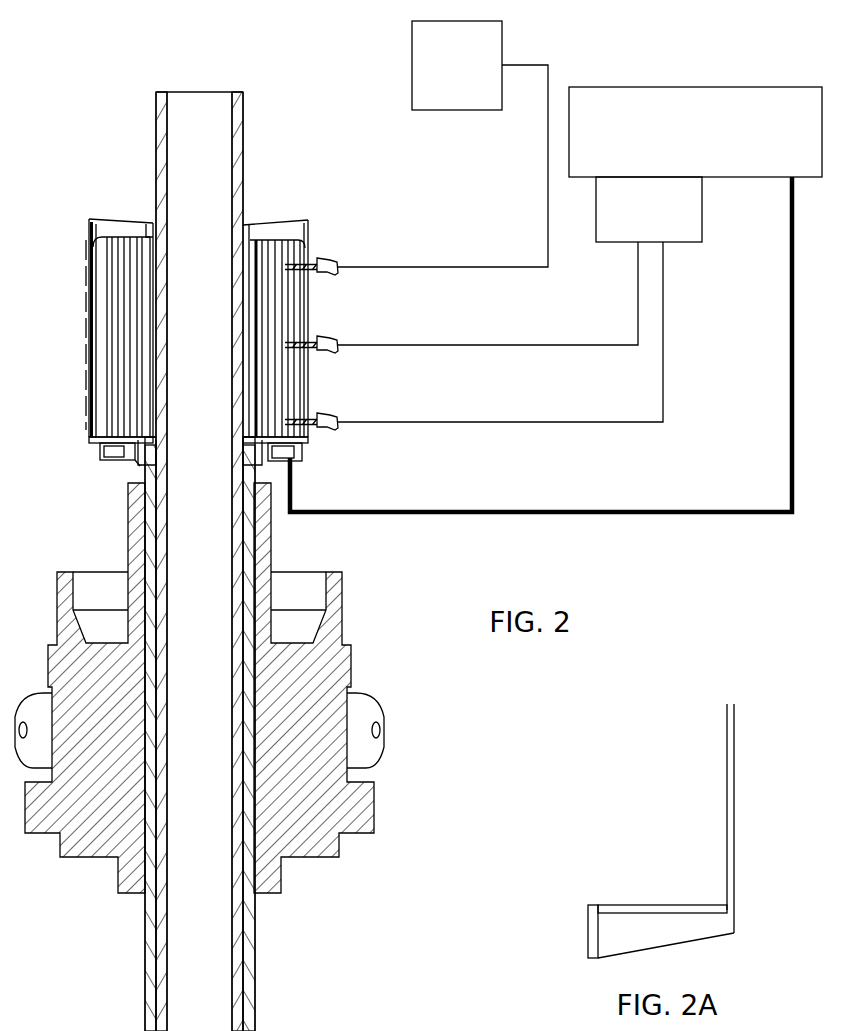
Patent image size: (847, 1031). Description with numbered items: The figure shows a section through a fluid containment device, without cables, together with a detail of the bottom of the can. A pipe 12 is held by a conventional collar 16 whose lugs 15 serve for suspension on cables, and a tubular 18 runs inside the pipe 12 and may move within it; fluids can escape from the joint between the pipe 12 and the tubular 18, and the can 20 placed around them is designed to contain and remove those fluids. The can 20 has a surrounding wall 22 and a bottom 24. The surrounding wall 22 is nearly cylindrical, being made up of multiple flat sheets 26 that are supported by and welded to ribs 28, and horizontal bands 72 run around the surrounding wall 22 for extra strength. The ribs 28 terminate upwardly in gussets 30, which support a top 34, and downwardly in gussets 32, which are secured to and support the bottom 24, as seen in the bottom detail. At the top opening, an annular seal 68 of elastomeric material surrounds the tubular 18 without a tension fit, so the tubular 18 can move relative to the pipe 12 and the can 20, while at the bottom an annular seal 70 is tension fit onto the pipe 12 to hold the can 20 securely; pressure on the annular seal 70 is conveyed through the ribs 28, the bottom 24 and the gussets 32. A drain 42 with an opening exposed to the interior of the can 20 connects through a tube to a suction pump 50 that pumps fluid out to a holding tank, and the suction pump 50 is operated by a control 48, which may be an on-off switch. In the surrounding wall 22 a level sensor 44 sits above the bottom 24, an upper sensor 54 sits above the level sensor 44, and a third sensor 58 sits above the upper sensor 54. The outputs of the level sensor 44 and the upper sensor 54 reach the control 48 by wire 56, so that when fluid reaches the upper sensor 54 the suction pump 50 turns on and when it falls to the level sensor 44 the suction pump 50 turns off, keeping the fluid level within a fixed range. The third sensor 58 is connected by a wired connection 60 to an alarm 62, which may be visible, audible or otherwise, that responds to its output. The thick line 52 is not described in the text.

In FIG. 2, the pipe 12 is at (250, 926).
In FIG. 2, the lugs 15 is at (368, 712).
In FIG. 2, the collar 16 is at (328, 665).
In FIG. 2, the tubular 18 is at (240, 977).
In FIG. 2, the can 20 is at (91, 173).
In FIG. 2, the surrounding wall 22 is at (82, 336).
In FIG. 2, the bottom 24 is at (100, 437).
In FIG. 2A, the bottom 24 is at (633, 905).
In FIG. 2, the flat sheets 26 is at (297, 332).
In FIG. 2, the ribs 28 is at (108, 273).
In FIG. 2A, the ribs 28 is at (731, 785).
In FIG. 2, the gussets 30 is at (100, 226).
In FIG. 2A, the gussets 32 is at (667, 935).
In FIG. 2, the top 34 is at (151, 218).
In FIG. 2, the drain 42 is at (293, 460).
In FIG. 2, the level sensor 44 is at (332, 420).
In FIG. 2, the control 48 is at (702, 226).
In FIG. 2, the suction pump 50 is at (750, 178).
In FIG. 2, the suction line 52 is at (652, 516).
In FIG. 2, the upper sensor 54 is at (332, 342).
In FIG. 2, the wire 56 is at (510, 348).
In FIG. 2, the third sensor 58 is at (332, 264).
In FIG. 2, the wired connection 60 is at (500, 270).
In FIG. 2, the alarm 62 is at (412, 65).
In FIG. 2, the annular seal 68 is at (246, 220).
In FIG. 2, the annular seal 70 is at (130, 462).
In FIG. 2A, the annular seal 70 is at (593, 926).
In FIG. 2, the horizontal bands 72 is at (89, 318).